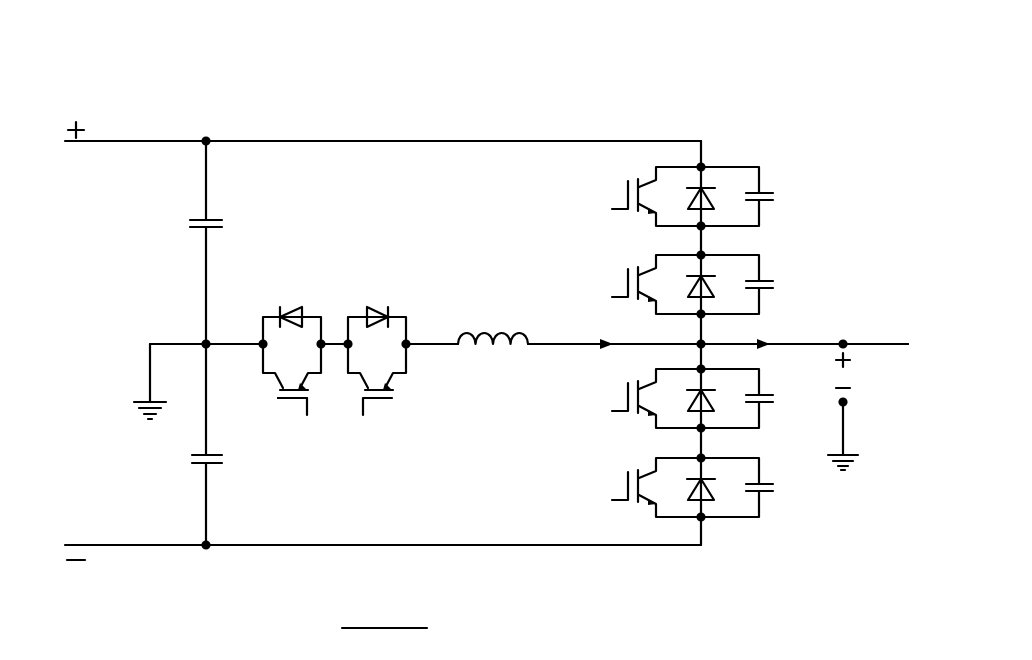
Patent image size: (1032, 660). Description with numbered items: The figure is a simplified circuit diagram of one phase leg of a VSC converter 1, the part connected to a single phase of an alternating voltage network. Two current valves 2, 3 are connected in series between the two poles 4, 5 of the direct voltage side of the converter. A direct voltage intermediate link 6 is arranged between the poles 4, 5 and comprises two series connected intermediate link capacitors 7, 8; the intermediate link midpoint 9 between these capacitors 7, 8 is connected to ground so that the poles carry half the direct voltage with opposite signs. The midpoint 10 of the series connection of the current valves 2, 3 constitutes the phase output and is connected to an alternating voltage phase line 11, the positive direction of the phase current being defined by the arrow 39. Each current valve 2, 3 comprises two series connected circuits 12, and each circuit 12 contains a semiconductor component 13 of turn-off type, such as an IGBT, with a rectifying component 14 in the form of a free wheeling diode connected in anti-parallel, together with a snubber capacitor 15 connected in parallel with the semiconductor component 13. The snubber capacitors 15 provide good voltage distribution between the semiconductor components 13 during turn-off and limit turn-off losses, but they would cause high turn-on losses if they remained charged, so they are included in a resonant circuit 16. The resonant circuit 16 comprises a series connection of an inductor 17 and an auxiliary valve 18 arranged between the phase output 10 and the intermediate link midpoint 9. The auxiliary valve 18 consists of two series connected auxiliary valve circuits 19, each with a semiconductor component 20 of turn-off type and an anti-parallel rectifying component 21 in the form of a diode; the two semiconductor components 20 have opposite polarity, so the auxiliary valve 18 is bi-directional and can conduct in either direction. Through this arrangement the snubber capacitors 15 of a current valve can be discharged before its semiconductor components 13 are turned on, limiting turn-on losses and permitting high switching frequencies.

The converter circuit 1 is at (415, 100).
The current valve 2 is at (706, 200).
The current valve 3 is at (792, 480).
The pole 4 is at (123, 141).
The pole 5 is at (120, 545).
The direct voltage intermediate link 6 is at (185, 343).
The intermediate link capacitor 7 is at (212, 222).
The intermediate link capacitor 8 is at (213, 463).
The intermediate link midpoint 9 is at (189, 319).
The phase output 10 is at (701, 344).
The alternating voltage phase line 11 is at (875, 340).
The series connected circuit 12 is at (706, 200).
The semiconductor component of turn-off type 13 is at (622, 193).
The rectifying component 14 is at (688, 197).
The snubber capacitor 15 is at (765, 195).
The resonant circuit 16 is at (395, 332).
The inductor 17 is at (488, 340).
The auxiliary valve 18 is at (351, 337).
The auxiliary valve circuit 19 is at (351, 323).
The semiconductor component of turn-off type 20 is at (290, 400).
The rectifying component 21 is at (298, 307).
The arrow 39 is at (767, 353).